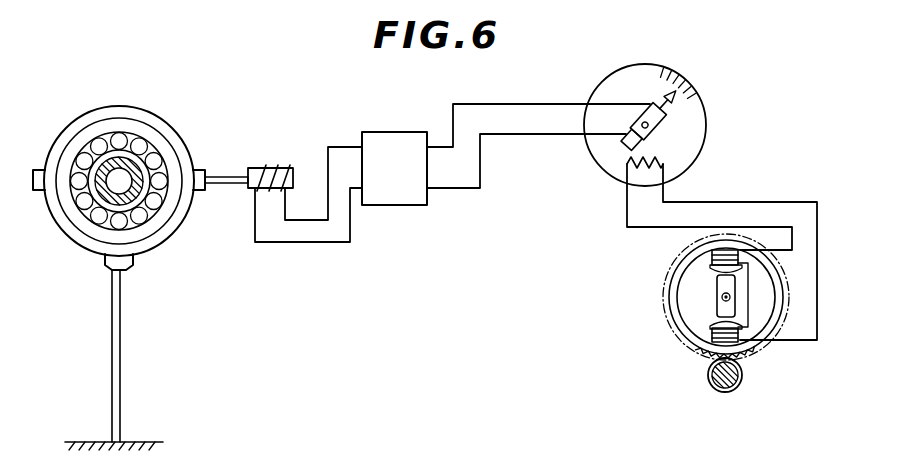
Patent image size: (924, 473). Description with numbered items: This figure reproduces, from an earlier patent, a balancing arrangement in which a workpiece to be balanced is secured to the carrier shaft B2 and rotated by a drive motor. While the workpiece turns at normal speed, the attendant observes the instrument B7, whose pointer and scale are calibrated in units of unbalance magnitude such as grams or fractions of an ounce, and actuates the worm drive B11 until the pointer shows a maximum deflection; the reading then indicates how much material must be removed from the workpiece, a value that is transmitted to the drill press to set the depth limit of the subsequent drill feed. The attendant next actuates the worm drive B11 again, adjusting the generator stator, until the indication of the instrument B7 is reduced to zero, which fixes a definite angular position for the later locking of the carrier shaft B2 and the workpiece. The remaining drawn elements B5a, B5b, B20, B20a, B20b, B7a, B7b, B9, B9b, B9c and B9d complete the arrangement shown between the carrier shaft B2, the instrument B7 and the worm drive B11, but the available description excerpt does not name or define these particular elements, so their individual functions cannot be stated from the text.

The ball bearing housing B5a is at (86, 146).
The carrier shaft B2 is at (142, 158).
The support stand B5b is at (122, 333).
The pickup coil transducer B20 is at (278, 155).
The amplifier B20a is at (400, 132).
The amplifier output leads B20b is at (560, 136).
The instrument B7 is at (704, 118).
The meter movement coil B7b is at (663, 118).
The resistor B7a is at (663, 158).
The motor B9 is at (816, 304).
The motor field stator B9c is at (668, 285).
The motor armature B9d is at (722, 298).
The armature shaft B9b is at (730, 300).
The worm drive B11 is at (735, 391).